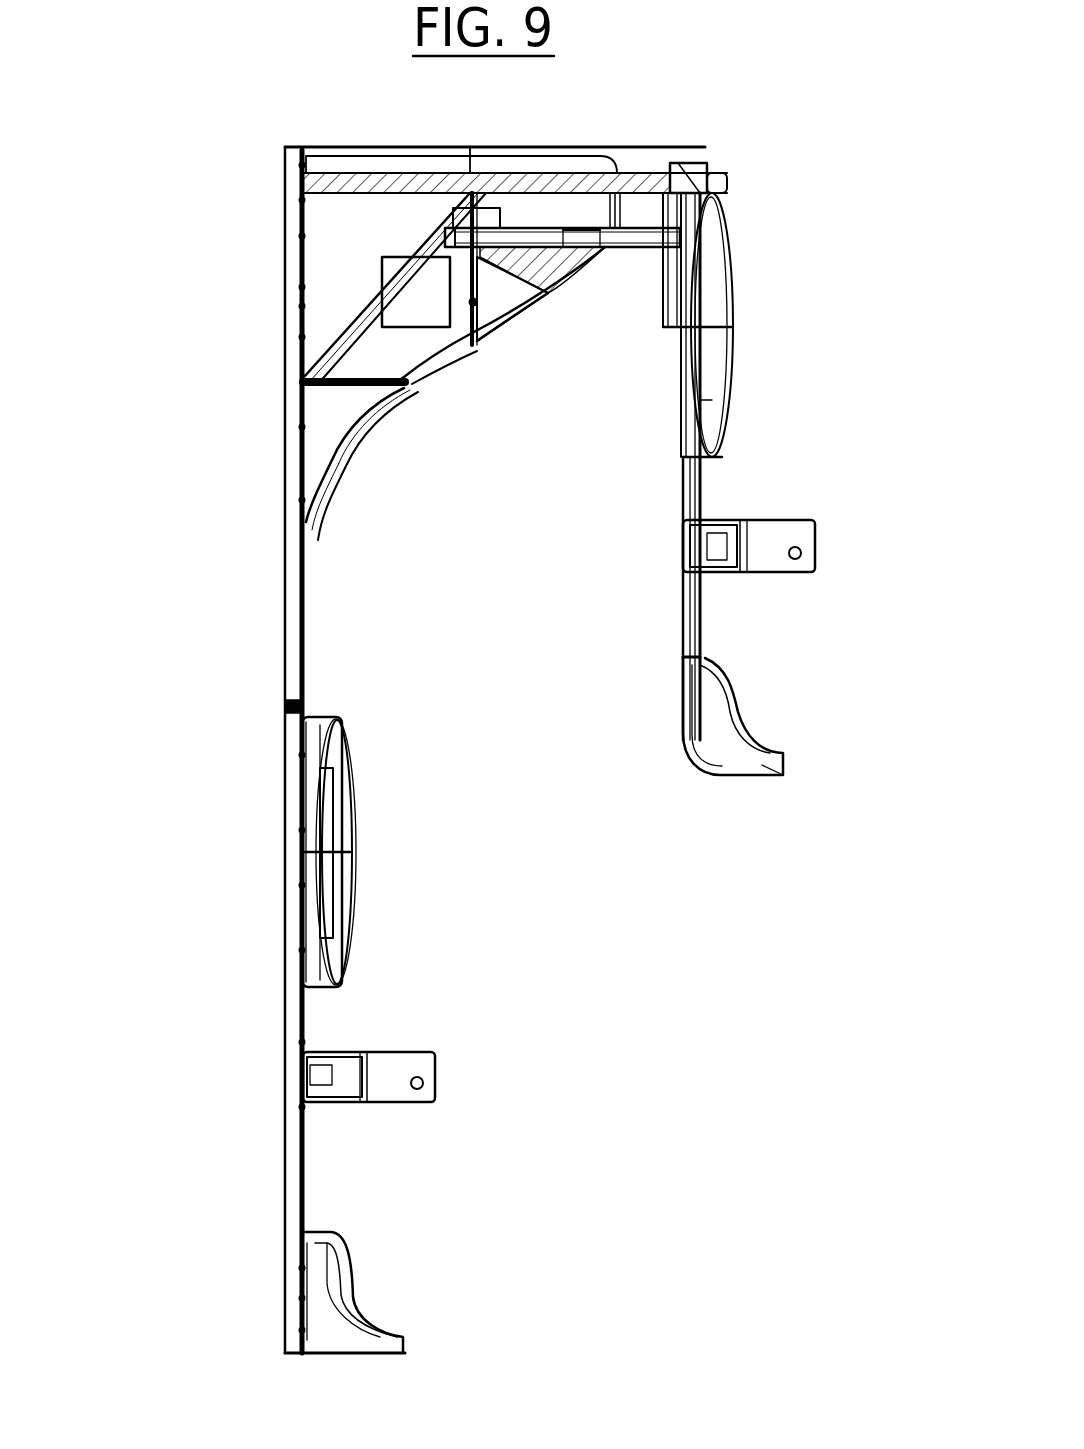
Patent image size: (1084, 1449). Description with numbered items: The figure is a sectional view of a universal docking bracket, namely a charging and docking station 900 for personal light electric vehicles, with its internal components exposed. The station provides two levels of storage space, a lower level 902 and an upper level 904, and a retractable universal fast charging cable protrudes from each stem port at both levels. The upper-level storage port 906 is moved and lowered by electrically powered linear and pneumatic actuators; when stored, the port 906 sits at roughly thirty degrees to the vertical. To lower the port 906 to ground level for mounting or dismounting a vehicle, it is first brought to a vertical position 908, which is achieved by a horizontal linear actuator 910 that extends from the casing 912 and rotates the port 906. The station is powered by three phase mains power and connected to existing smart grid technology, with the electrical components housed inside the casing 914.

The charging and docking station 900 is at (294, 190).
The lower level 902 is at (433, 1083).
The upper level 904 is at (723, 523).
The upper-level storage port 906 is at (684, 597).
The vertical position 908 is at (693, 623).
The horizontal linear actuator 910 is at (620, 235).
The casing 912 is at (293, 270).
The casing 914 is at (416, 298).